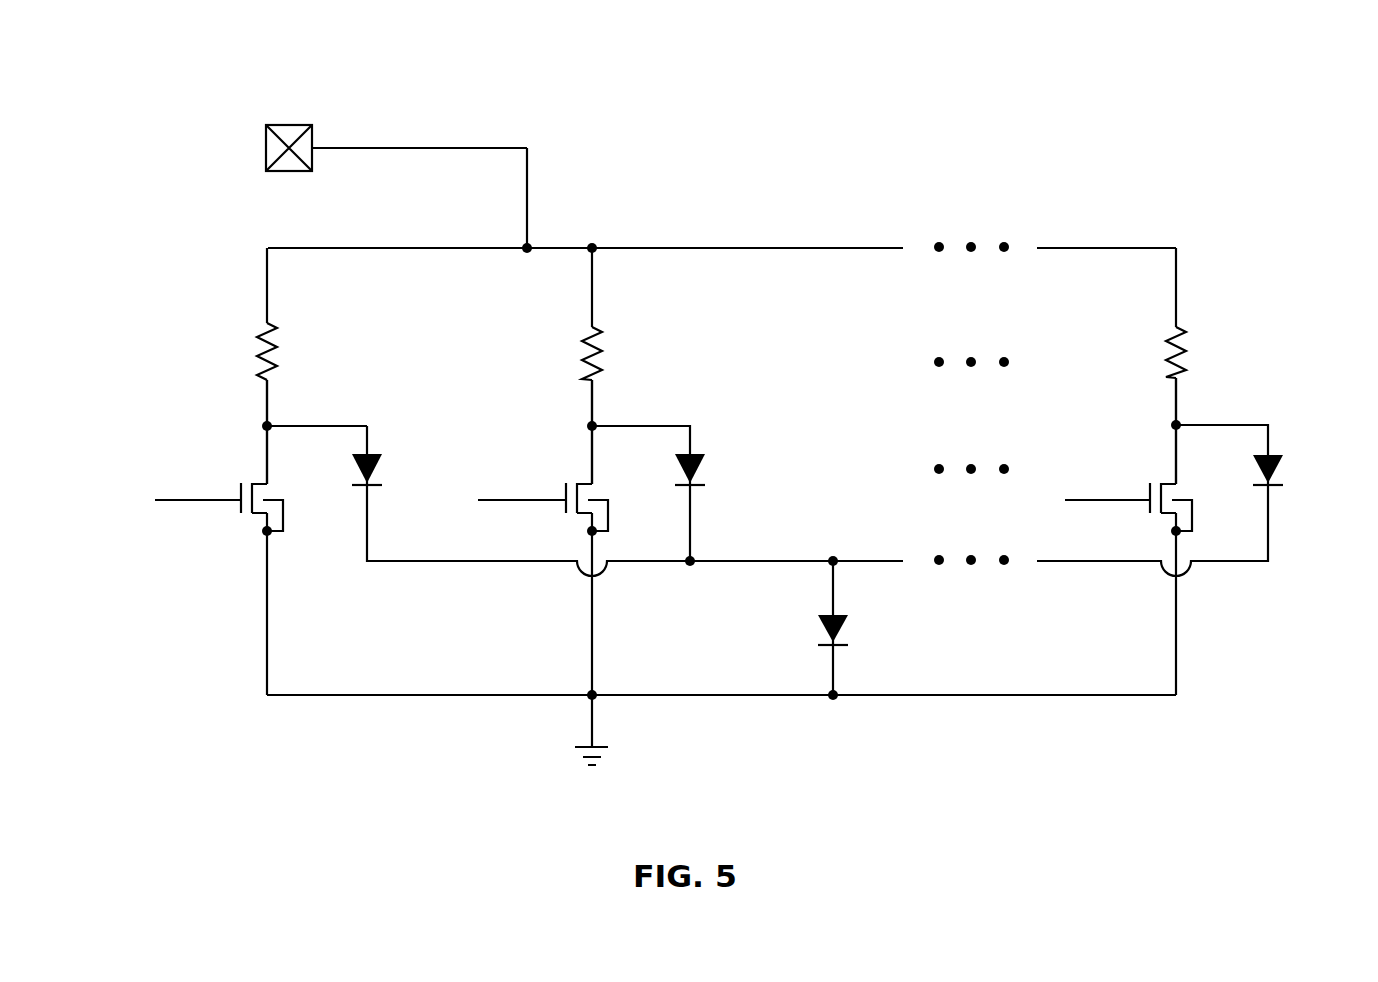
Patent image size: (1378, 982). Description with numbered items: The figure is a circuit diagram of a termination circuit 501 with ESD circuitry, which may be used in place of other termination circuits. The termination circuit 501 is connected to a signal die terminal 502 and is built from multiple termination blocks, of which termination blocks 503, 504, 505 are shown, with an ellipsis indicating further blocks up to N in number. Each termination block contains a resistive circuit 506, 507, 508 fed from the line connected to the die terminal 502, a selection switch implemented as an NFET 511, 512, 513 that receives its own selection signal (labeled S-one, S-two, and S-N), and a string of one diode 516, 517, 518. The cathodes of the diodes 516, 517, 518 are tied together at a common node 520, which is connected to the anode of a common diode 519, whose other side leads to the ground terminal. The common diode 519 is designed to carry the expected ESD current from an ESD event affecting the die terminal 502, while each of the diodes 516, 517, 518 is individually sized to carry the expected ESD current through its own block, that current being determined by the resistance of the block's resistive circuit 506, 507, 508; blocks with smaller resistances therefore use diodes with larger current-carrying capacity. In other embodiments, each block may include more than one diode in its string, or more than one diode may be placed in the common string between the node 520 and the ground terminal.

The termination circuit 501 is at (1243, 76).
The signal die terminal 502 is at (290, 125).
The termination block 503 is at (226, 314).
The termination block 504 is at (682, 398).
The termination block 505 is at (1269, 357).
The resistive circuit 506 is at (257, 360).
The resistive circuit 507 is at (580, 358).
The resistive circuit 508 is at (1165, 358).
The selection switch 511 is at (260, 520).
The selection switch 512 is at (584, 480).
The selection switch 513 is at (1170, 478).
The diode 516 is at (382, 470).
The diode 517 is at (705, 468).
The diode 518 is at (1283, 468).
The common diode 519 is at (850, 622).
The node 520 is at (835, 555).